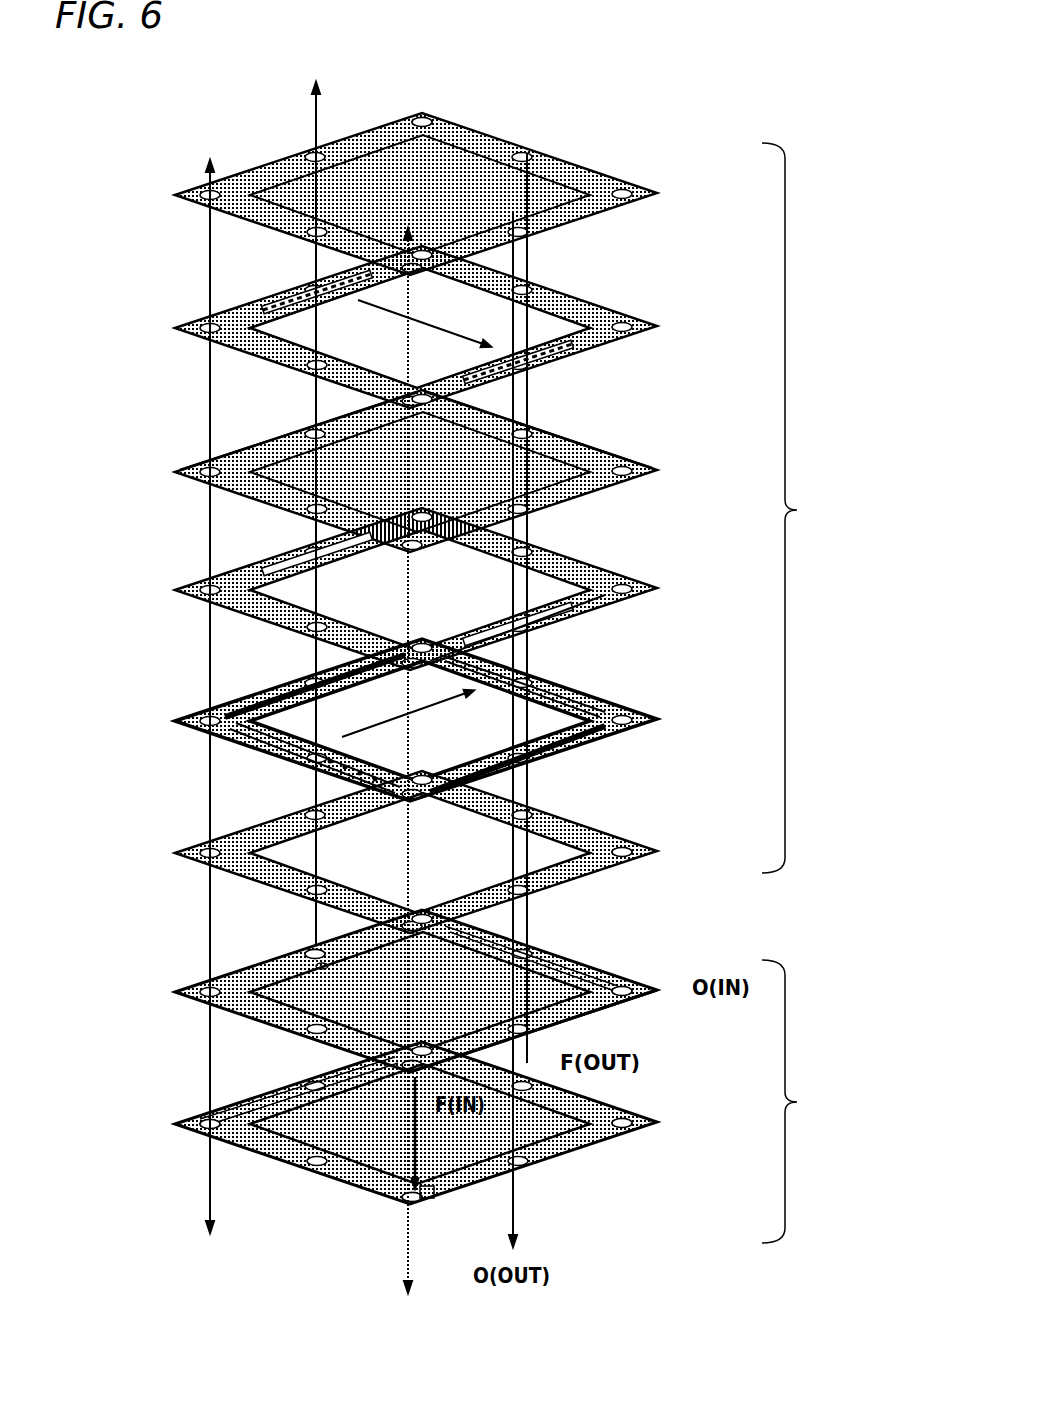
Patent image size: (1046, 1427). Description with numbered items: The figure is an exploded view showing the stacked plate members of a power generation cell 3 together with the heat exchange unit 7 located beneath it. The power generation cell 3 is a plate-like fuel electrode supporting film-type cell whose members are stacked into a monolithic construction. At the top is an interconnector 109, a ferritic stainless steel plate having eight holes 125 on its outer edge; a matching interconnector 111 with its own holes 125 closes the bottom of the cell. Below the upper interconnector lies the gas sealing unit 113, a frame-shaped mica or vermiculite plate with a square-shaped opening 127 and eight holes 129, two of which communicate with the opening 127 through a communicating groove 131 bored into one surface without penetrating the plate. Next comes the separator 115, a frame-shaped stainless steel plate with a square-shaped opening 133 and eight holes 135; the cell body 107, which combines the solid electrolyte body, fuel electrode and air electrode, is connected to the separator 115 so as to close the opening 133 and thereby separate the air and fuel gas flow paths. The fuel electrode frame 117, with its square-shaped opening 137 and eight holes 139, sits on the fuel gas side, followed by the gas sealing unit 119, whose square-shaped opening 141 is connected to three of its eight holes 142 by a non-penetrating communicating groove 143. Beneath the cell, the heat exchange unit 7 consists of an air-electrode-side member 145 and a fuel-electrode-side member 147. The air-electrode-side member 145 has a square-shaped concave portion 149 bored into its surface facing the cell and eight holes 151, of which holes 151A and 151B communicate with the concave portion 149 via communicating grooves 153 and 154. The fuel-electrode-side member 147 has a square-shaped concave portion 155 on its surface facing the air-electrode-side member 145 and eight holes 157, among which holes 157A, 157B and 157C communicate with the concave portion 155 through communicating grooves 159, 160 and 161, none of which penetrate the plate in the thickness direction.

The power generation cell 3 is at (817, 508).
The heat exchange unit 7 is at (793, 1101).
The cell body 107 is at (543, 470).
The interconnector 109 is at (652, 190).
The interconnector 111 is at (652, 845).
The gas sealing unit 113 is at (650, 323).
The separator 115 is at (605, 490).
The fuel electrode frame 117 is at (647, 585).
The gas sealing unit 119 is at (640, 713).
The holes 125 is at (424, 114).
The opening 127 is at (545, 320).
The holes 129 is at (276, 302).
The communicating groove 131 is at (330, 300).
The opening 133 is at (277, 447).
The holes 135 is at (633, 462).
The opening 137 is at (585, 558).
The holes 139 is at (606, 610).
The opening 141 is at (575, 683).
The holes 142 is at (617, 740).
The communicating groove 143 is at (283, 723).
The air-electrode-side member 145 is at (645, 990).
The fuel-electrode-side member 147 is at (605, 1097).
The concave portion 149 is at (450, 965).
The holes 151 is at (590, 1022).
The hole 151A is at (640, 985).
The hole 151B is at (293, 960).
The communicating groove 153 is at (585, 985).
The communicating groove 154 is at (317, 963).
The concave portion 155 is at (540, 1120).
The holes 157 is at (637, 1122).
The hole 157A is at (425, 1045).
The hole 157B is at (393, 1205).
The hole 157C is at (190, 1112).
The communicating groove 159 is at (437, 1083).
The communicating groove 160 is at (432, 1190).
The communicating groove 161 is at (247, 1112).